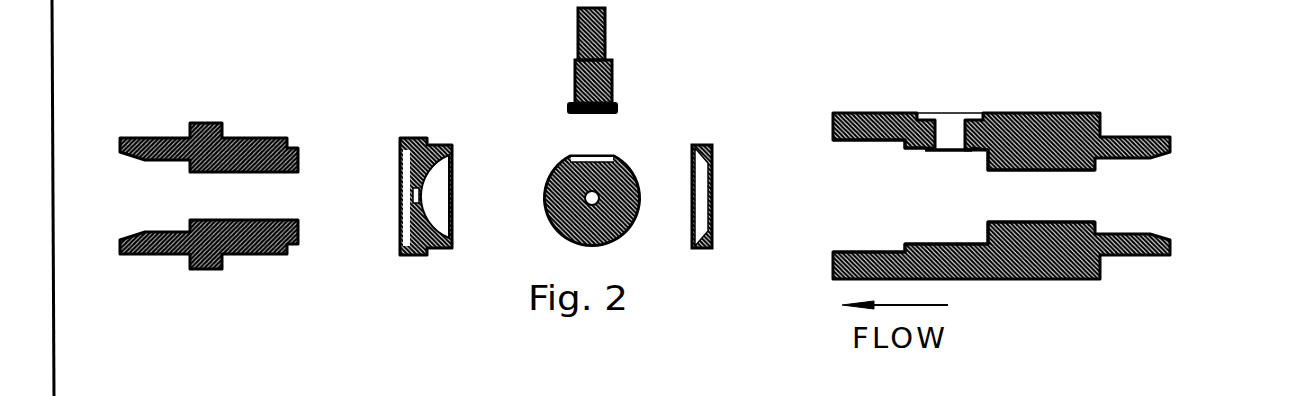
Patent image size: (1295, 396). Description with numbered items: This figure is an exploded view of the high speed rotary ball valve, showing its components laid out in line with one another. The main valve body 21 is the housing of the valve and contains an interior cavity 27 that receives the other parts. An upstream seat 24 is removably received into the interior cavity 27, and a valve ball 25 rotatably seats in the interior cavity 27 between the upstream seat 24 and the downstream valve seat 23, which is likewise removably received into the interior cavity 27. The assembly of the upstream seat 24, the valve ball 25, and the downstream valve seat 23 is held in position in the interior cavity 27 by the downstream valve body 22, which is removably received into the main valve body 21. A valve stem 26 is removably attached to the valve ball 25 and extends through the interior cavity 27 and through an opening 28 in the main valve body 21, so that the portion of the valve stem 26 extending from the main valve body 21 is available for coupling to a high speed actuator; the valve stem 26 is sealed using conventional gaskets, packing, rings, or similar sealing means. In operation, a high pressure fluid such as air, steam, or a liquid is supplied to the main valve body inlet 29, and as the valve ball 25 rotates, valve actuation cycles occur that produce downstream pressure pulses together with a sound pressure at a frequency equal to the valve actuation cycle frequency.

The main valve body 21 is at (1001, 177).
The downstream valve body 22 is at (209, 174).
The downstream valve seat 23 is at (426, 165).
The upstream seat 24 is at (705, 165).
The valve ball 25 is at (573, 197).
The valve stem 26 is at (575, 56).
The interior cavity 27 is at (964, 196).
The opening 28 is at (945, 110).
The main valve body inlet 29 is at (1178, 197).